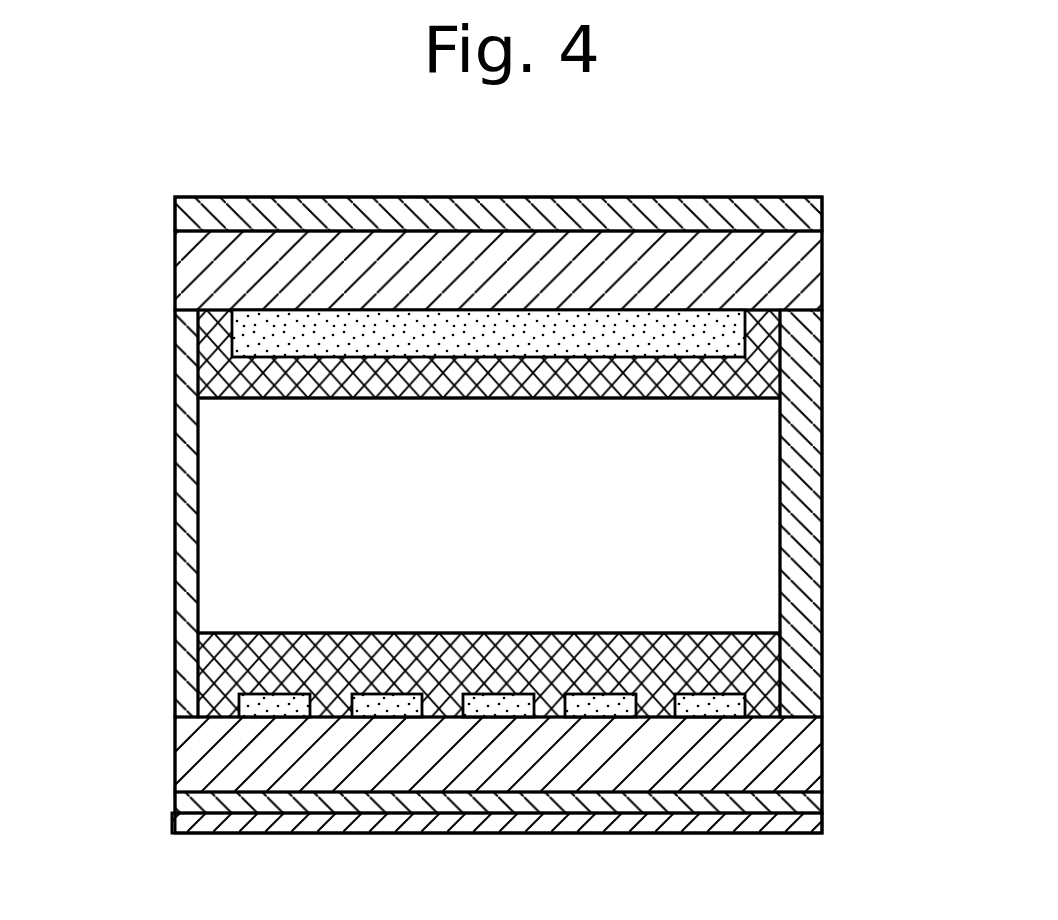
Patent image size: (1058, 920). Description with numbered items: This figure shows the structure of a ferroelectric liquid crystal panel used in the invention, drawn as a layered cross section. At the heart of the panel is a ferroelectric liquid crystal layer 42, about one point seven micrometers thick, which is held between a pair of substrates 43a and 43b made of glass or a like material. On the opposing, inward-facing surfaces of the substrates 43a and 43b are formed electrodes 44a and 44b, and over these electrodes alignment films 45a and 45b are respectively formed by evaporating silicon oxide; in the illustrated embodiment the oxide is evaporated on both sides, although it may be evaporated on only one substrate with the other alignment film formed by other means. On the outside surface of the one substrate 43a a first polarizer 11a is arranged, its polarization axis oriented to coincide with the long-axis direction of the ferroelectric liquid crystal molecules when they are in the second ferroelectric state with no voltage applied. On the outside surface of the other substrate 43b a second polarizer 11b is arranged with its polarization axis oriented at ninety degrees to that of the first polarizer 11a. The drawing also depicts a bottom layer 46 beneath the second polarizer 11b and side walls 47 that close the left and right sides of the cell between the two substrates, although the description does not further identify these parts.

The first polarizer 11a is at (455, 210).
The second polarizer 11b is at (800, 805).
The ferroelectric liquid crystal layer 42 is at (300, 565).
The substrate 43a is at (772, 270).
The substrate 43b is at (227, 758).
The electrode 44a is at (243, 335).
The electrode 44b is at (257, 703).
The alignment film 45a is at (753, 375).
The alignment film 45b is at (735, 667).
The back plate 46 is at (525, 835).
The side walls 47 is at (185, 453).